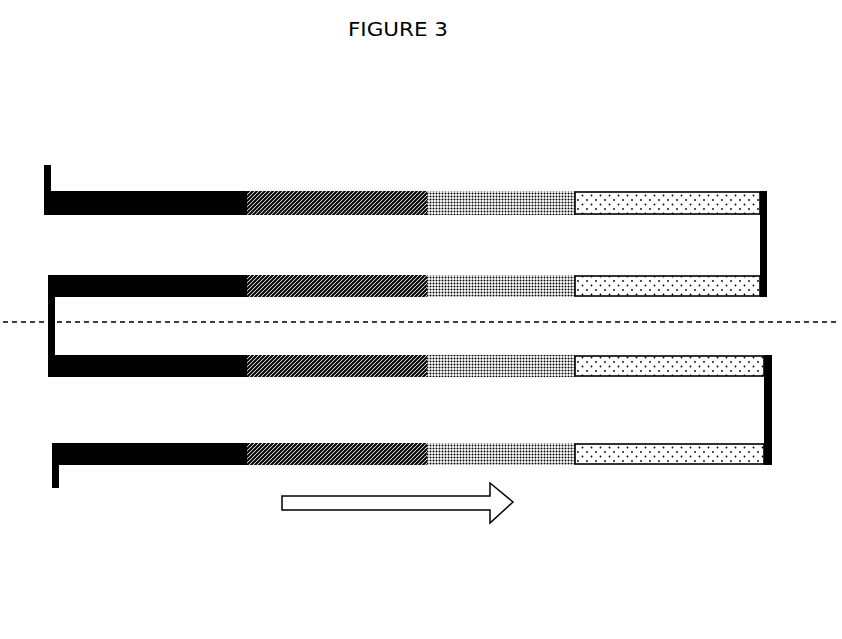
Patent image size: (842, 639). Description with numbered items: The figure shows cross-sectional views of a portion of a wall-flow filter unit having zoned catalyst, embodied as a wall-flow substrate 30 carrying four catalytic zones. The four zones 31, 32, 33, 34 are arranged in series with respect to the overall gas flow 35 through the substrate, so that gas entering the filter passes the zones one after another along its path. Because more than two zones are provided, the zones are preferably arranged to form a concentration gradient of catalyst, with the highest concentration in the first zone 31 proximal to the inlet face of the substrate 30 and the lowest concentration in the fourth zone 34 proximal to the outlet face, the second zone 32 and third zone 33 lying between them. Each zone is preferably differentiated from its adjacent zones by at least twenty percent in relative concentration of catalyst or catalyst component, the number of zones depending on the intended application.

The wall-flow substrate 30 is at (421, 361).
The first zone 31 is at (130, 277).
The second zone 32 is at (307, 277).
The third zone 33 is at (518, 277).
The fourth zone 34 is at (662, 288).
The overall gas flow 35 is at (333, 503).